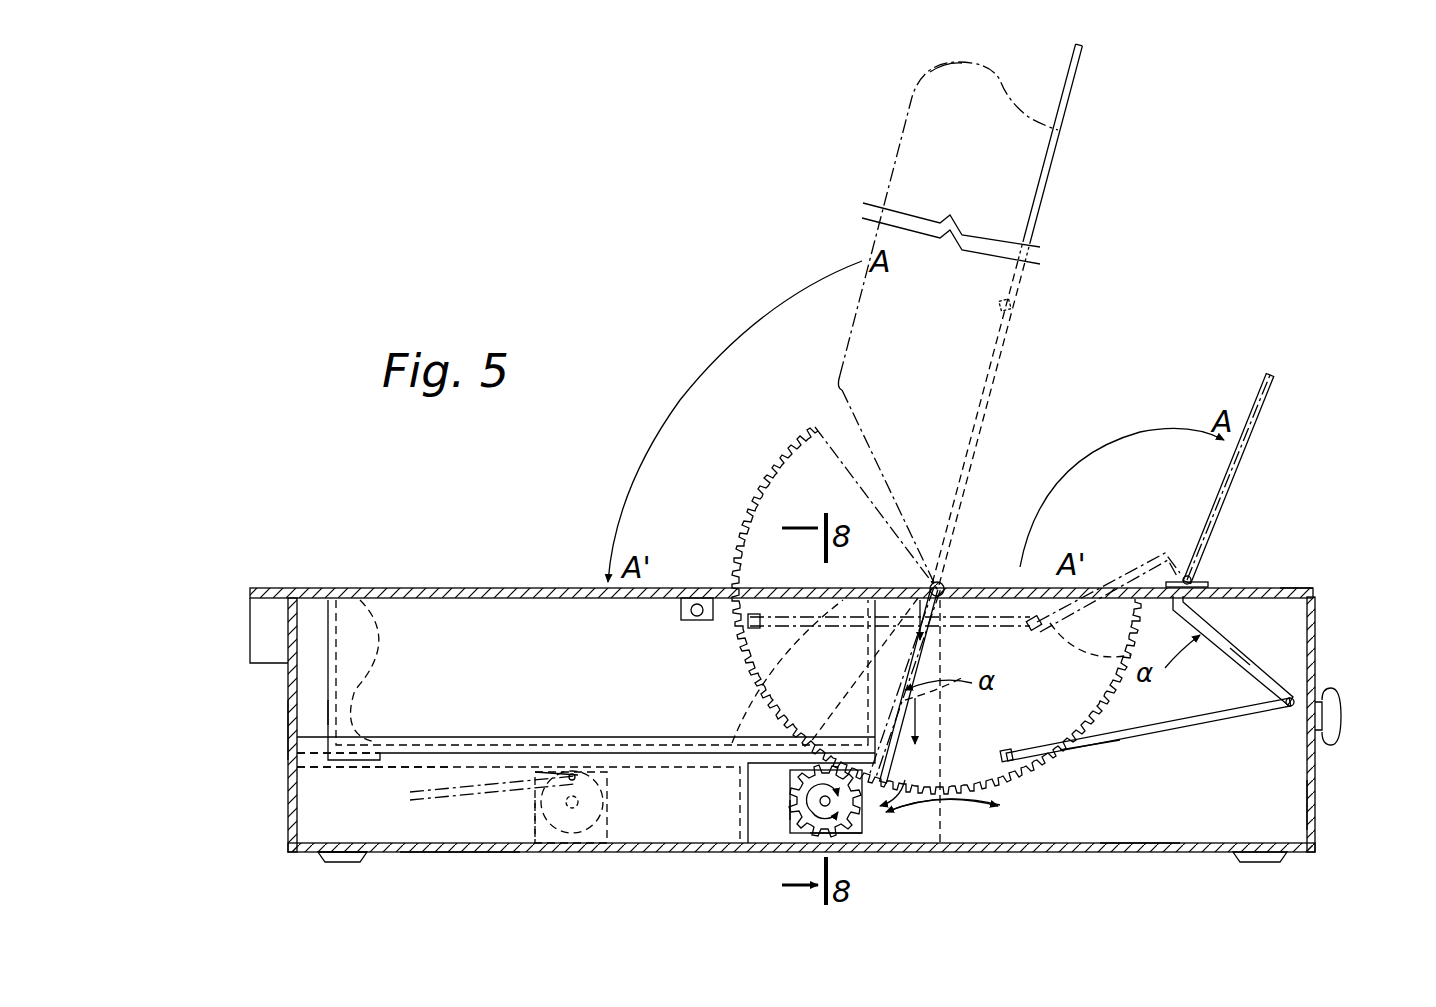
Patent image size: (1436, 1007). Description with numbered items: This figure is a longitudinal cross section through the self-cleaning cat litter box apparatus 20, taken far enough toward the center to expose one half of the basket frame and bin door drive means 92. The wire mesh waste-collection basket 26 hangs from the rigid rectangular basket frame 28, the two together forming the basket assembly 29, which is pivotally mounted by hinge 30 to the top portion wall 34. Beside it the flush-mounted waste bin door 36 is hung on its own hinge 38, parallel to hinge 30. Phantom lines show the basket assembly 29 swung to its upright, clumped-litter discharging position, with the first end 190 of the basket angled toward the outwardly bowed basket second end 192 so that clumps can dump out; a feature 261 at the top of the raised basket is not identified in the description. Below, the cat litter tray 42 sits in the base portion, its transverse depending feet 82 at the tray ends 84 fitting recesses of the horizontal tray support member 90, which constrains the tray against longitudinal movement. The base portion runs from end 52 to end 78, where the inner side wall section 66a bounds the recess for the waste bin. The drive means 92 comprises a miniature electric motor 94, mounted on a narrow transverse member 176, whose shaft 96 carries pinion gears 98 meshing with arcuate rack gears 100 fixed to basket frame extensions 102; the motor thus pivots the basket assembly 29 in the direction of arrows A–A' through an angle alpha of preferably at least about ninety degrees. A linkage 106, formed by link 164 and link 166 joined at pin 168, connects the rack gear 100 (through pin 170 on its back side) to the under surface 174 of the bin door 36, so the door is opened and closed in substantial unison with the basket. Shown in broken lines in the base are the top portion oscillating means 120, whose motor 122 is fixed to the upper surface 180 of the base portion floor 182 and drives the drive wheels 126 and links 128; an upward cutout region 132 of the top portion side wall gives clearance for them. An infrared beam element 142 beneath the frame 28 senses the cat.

The self-cleaning cat litter box apparatus 20 is at (566, 520).
The waste-collection basket 26 is at (360, 615).
The basket frame 28 is at (1052, 125).
The basket assembly 29 is at (1045, 222).
The hinge 30 is at (955, 582).
The top portion wall 34 is at (1313, 590).
The waste bin door 36 is at (1008, 588).
The hinge 38 is at (1192, 580).
The cat litter tray 42 is at (320, 616).
The base portion end 52 is at (288, 725).
The inner side wall section 66a is at (1140, 832).
The base portion end 78 is at (1316, 800).
The transverse depending feet 82 is at (336, 765).
The litter tray end 84 is at (328, 712).
The horizontal tray support member 90 is at (388, 770).
The basket assembly pivoting means 92 is at (1070, 760).
The miniature electric motor 94 is at (790, 778).
The shaft 96 is at (822, 803).
The pinion gear 98 is at (862, 815).
The arcuate rack gear 100 is at (775, 482).
The basket frame extension 102 is at (1040, 583).
The linkage 106 is at (1268, 664).
The top portion oscillating means 120 is at (606, 830).
The miniature electric motor 122 is at (537, 822).
The drive wheel 126 is at (590, 770).
The link 128 is at (452, 788).
The upward cutout region 132 is at (1341, 712).
The infrared beam element 142 is at (700, 588).
The link 164 is at (992, 585).
The link 166 is at (1130, 575).
The pin 168 is at (1288, 708).
The pin 170 is at (1006, 750).
The under surface 174 is at (1220, 470).
The narrow transverse member 176 is at (852, 833).
The upper surface 180 is at (415, 836).
The base portion floor 182 is at (470, 856).
The basket first end 190 is at (887, 460).
The basket second end 192 is at (1010, 75).
The handle grip top 261 is at (934, 66).